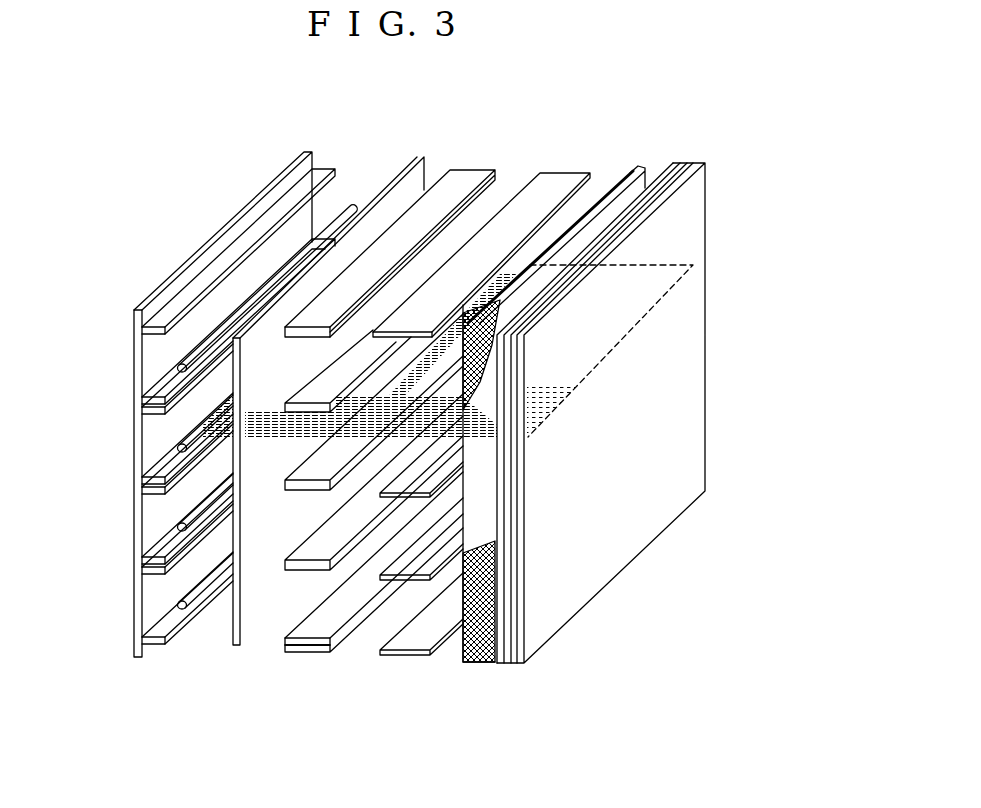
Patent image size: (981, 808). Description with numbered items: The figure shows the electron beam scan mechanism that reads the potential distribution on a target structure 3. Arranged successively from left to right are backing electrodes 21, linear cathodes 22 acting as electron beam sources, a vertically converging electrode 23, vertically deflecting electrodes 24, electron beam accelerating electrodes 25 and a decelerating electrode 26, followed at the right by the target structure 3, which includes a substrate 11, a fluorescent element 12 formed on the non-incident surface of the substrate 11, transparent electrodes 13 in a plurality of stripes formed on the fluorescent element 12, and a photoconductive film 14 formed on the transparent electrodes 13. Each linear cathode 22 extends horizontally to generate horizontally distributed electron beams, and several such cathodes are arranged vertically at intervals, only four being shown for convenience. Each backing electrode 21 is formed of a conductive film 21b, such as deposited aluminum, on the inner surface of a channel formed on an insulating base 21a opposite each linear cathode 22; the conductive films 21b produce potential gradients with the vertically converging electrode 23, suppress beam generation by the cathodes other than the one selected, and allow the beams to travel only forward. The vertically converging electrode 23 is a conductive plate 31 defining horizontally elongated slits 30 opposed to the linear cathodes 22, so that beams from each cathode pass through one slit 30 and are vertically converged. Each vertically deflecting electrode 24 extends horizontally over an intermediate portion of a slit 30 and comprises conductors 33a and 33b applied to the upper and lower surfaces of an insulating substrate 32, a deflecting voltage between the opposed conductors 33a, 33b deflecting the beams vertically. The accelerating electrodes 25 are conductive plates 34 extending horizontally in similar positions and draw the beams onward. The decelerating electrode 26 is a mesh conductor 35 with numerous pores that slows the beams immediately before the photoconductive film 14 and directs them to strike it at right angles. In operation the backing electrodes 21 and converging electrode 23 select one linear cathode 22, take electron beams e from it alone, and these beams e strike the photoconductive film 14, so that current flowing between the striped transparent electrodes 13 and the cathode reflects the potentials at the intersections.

The target structure 3 is at (596, 424).
The substrate 11 is at (532, 659).
The fluorescent element 12 is at (514, 666).
The transparent electrodes 13 is at (507, 665).
The photoconductive film 14 is at (497, 665).
The backing electrodes 21 is at (195, 381).
The insulating base 21a is at (133, 593).
The conductive film 21b is at (155, 603).
The linear cathodes 22 is at (355, 203).
The vertically converging electrode 23 is at (424, 155).
The vertically deflecting electrodes 24 is at (478, 163).
The electron beam accelerating electrodes 25 is at (557, 167).
The decelerating electrode 26 is at (637, 166).
The slits 30 is at (302, 513).
The conductive plate 31 is at (227, 634).
The insulating substrate 32 is at (357, 613).
The conductor 33a is at (285, 632).
The conductor 33b is at (348, 640).
The conductive plates 34 is at (400, 655).
The mesh conductor 35 is at (468, 663).
The electron beams e is at (290, 466).